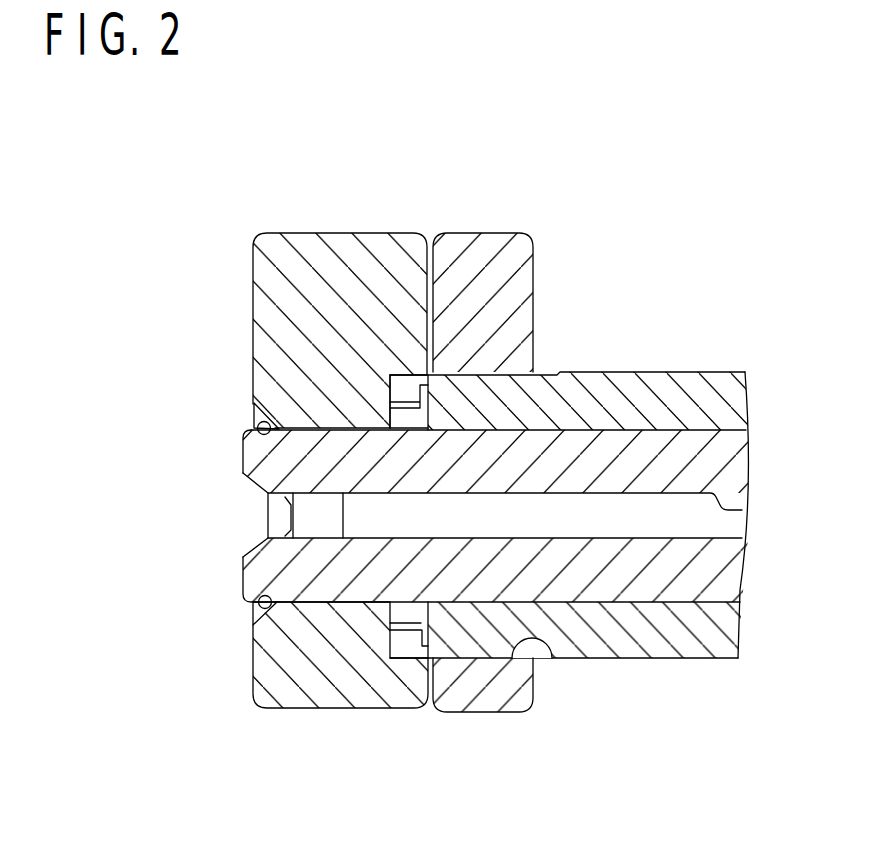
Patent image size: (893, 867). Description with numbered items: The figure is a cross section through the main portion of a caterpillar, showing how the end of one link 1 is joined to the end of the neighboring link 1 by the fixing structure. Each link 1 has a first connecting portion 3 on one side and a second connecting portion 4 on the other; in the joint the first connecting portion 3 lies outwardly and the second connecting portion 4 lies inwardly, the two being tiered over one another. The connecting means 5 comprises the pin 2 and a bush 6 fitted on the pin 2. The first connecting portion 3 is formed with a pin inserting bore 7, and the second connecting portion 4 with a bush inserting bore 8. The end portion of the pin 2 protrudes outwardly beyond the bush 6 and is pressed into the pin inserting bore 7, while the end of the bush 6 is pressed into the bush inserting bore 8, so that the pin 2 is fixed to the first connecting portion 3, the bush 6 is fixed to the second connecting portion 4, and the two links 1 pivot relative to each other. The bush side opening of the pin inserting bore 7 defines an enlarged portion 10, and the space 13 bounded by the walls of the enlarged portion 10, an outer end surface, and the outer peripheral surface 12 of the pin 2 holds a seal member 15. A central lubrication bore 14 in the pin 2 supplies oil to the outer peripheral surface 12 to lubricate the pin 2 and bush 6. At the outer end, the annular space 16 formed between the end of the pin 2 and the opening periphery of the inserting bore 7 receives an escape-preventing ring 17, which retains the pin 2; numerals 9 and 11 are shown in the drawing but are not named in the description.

The link 1 is at (532, 237).
The pin 2 is at (630, 429).
The first connecting portion 3 is at (250, 663).
The second connecting portion 4 is at (487, 698).
The connecting means 5 is at (677, 371).
The bush 6 is at (658, 662).
The pin inserting bore 7 is at (278, 592).
The bush inserting bore 8 is at (555, 659).
The upper housing member 9 is at (305, 418).
The enlarged portion 10 is at (405, 431).
The seal ring 11 is at (418, 397).
The outer peripheral surface 12 is at (543, 427).
The space 13 is at (418, 420).
The central lubrication bore 14 is at (750, 503).
The seal member 15 is at (403, 660).
The annular space 16 is at (258, 413).
The escape-preventing ring 17 is at (258, 438).